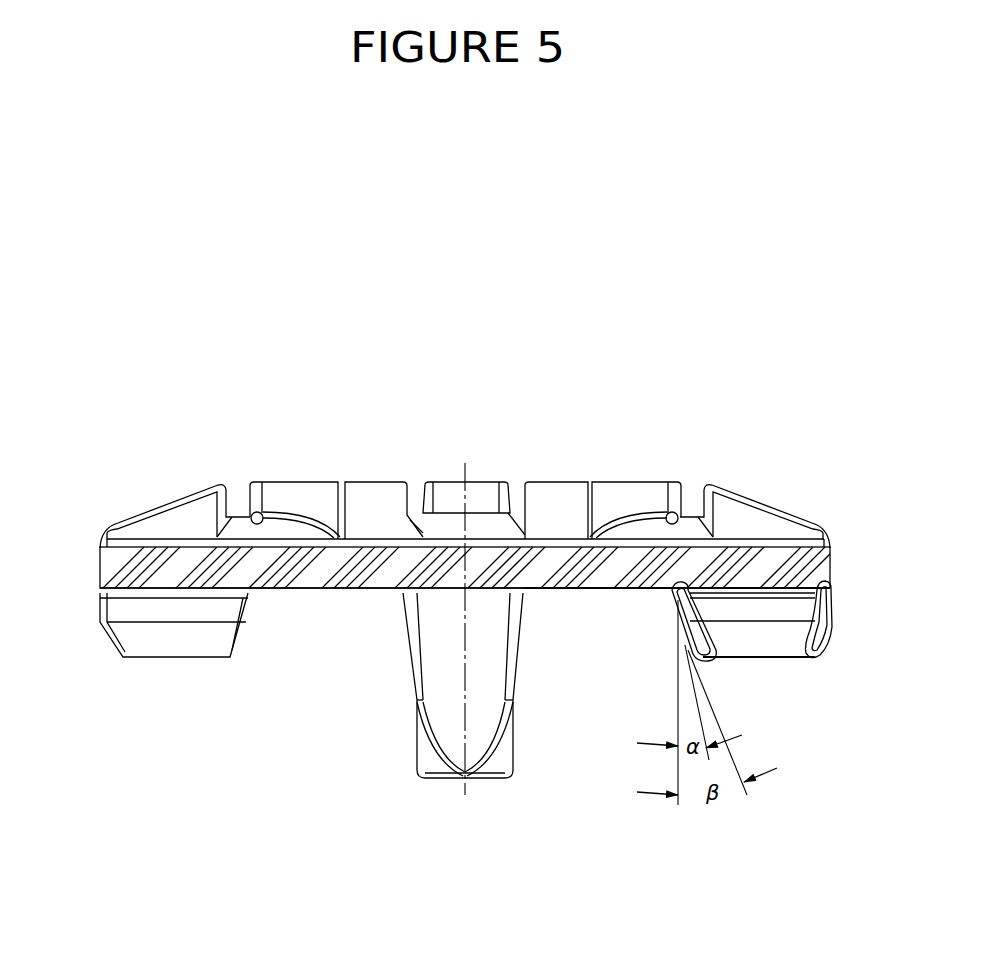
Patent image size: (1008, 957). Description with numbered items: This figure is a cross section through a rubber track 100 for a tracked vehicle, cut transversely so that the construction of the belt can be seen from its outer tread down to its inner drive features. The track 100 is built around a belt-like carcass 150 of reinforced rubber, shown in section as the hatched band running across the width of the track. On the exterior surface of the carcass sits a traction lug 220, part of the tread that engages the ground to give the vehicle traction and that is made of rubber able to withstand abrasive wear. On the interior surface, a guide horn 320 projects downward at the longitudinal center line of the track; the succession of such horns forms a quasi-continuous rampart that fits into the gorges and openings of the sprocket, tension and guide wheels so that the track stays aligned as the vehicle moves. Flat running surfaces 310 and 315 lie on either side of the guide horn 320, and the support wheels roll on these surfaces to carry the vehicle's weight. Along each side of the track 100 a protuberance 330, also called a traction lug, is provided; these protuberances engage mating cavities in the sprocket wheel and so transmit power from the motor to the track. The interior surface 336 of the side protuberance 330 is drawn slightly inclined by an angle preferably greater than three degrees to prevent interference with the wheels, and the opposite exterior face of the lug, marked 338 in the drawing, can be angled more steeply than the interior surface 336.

The track 100 is at (150, 505).
The carcass 150 is at (128, 568).
The traction lug 220 is at (370, 512).
The flat running surface 310 is at (321, 592).
The flat running surface 315 is at (579, 592).
The guide horn 320 is at (452, 666).
The protuberance (traction lug) 330 is at (160, 635).
The interior surface 336 is at (670, 610).
The outer arm 338 is at (824, 647).